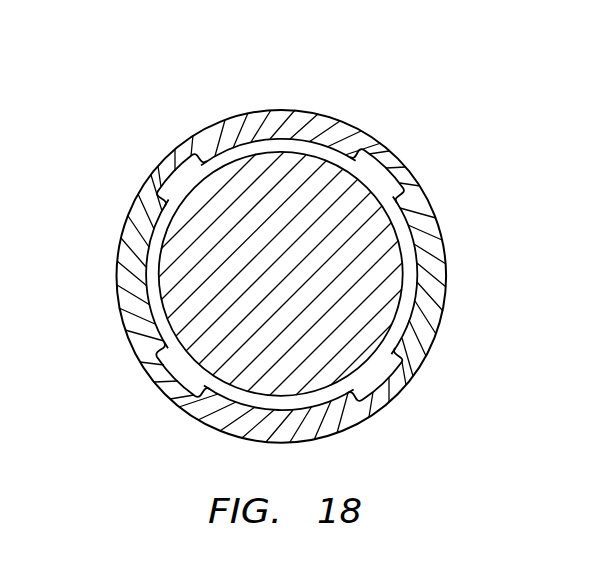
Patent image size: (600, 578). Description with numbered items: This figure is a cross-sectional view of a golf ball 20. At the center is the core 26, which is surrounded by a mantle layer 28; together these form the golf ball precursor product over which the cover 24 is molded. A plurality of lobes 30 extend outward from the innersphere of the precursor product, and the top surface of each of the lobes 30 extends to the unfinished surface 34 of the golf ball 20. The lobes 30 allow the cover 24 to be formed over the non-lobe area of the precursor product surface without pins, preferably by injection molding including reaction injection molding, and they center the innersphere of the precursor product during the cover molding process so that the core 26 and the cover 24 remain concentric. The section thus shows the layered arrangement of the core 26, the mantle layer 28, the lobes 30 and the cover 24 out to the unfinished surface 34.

The golf ball 20 is at (320, 90).
The cover 24 is at (123, 286).
The core 26 is at (193, 246).
The mantle layer 28 is at (405, 219).
The lobes 30 is at (167, 171).
The unfinished surface 34 is at (444, 256).